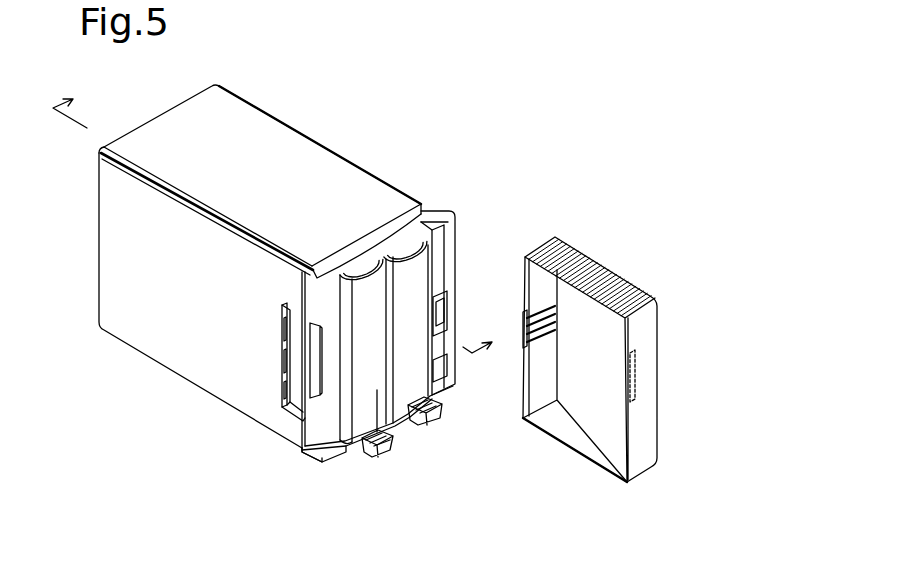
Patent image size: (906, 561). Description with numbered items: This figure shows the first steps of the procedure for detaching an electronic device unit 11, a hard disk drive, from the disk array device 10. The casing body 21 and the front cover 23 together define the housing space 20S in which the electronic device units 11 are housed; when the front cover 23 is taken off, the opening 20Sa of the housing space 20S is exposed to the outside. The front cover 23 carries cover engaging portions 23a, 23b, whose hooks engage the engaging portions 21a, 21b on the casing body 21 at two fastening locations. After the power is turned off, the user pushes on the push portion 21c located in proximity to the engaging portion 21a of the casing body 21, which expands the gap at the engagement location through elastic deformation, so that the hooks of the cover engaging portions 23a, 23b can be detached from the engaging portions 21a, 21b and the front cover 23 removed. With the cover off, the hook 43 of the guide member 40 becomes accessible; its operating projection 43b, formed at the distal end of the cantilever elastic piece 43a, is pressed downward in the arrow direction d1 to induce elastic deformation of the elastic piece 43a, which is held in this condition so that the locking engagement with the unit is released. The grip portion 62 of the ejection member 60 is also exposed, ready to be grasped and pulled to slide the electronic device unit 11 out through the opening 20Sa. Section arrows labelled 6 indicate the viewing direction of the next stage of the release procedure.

The disk array device 10 is at (304, 292).
The section line / viewing direction 6 is at (281, 217).
The casing body 21 is at (200, 332).
The engaging portion 21a is at (313, 368).
The engaging portion 21b is at (440, 320).
The push portion 21c is at (293, 360).
The grip portion 62 is at (379, 284).
The ejection member 60 is at (370, 255).
The electronic device unit 11 is at (360, 382).
The hook 43 is at (402, 458).
The guide member 40 is at (402, 458).
The elastic piece 43a is at (360, 450).
The operating projection 43b is at (392, 438).
The arrow direction d1 is at (393, 425).
The opening 20Sa is at (267, 494).
The housing space 20S is at (300, 448).
The front cover 23 is at (613, 352).
The cover engaging portion 23a is at (633, 382).
The cover engaging portion 23b is at (527, 332).